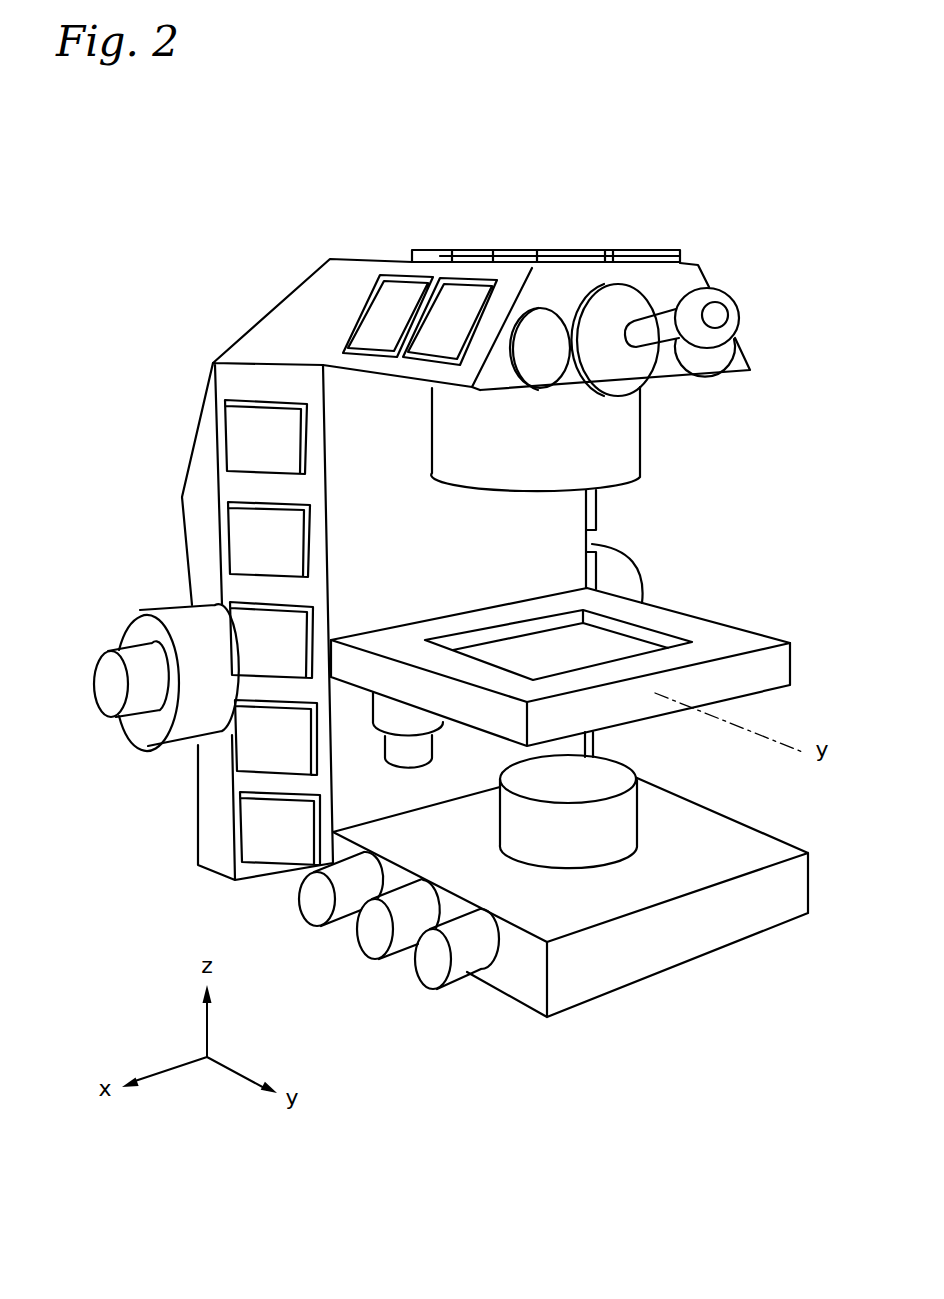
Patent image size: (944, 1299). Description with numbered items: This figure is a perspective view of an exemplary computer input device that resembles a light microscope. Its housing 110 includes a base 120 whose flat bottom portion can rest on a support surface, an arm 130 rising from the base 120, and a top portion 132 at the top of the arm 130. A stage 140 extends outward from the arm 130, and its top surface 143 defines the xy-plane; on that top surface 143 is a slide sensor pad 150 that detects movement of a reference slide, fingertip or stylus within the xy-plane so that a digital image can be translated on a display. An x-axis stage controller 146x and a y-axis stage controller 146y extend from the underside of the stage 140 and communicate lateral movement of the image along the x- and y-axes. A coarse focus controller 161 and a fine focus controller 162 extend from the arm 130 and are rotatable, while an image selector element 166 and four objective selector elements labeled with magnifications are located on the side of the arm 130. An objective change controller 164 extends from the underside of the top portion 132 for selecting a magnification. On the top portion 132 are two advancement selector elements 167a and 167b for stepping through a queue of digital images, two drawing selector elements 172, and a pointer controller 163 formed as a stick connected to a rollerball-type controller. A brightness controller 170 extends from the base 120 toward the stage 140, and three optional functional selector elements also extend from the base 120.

The housing 110 is at (190, 190).
The base 120 is at (752, 922).
The arm 130 is at (196, 490).
The top portion 132 is at (667, 282).
The stage 140 is at (763, 673).
The top surface 143 is at (745, 643).
The x-axis stage controller 146x is at (375, 695).
The y-axis stage controller 146y is at (400, 766).
The slide sensor pad 150 is at (593, 642).
The coarse focus controller 161 is at (160, 603).
The fine focus controller 162 is at (103, 653).
The pointer controller 163 is at (723, 291).
The objective change controller 164 is at (645, 440).
The image selector element 166 is at (261, 402).
The advancement selector element 167a is at (403, 273).
The advancement selector element 167b is at (457, 278).
The brightness controller 170 is at (613, 817).
The drawing selector element 172 is at (550, 313).